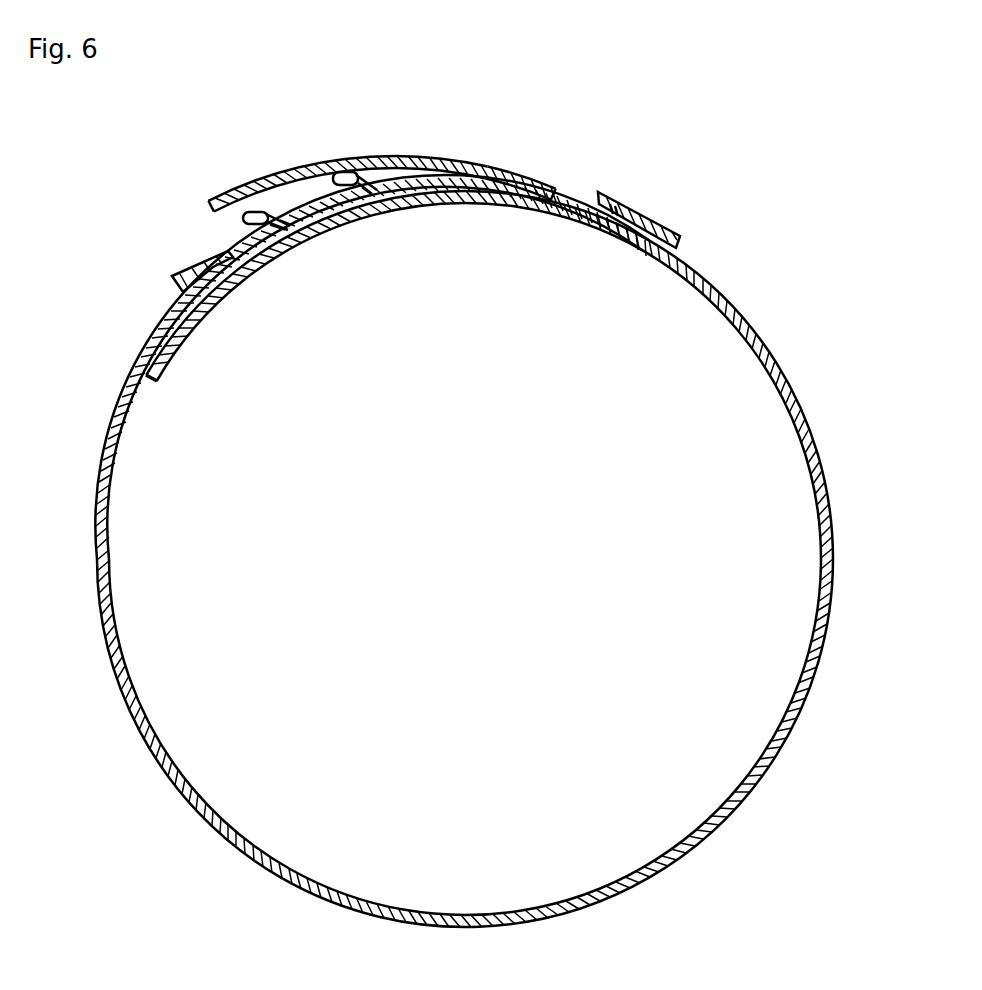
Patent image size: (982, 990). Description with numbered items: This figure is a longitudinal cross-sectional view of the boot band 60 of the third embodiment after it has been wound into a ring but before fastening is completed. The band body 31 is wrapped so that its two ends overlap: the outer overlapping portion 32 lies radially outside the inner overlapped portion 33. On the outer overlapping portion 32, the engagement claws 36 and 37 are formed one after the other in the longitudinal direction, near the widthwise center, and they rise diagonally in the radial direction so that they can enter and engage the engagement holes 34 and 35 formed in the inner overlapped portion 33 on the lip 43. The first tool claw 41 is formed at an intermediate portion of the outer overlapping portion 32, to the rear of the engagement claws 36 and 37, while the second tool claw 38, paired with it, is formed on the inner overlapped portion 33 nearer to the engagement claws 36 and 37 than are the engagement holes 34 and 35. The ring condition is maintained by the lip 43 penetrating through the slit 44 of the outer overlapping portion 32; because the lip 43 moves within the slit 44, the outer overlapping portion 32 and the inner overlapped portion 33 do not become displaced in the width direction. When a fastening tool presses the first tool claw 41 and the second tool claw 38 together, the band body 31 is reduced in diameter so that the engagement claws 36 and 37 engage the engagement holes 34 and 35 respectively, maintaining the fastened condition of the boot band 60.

The boot band 60 is at (803, 258).
The band body 31 is at (812, 418).
The outer overlapping portion 32 is at (217, 237).
The inner overlapped portion 33 is at (558, 231).
The engagement hole 34 is at (382, 144).
The engagement hole 35 is at (250, 182).
The engagement claw 36 is at (347, 190).
The engagement claw 37 is at (259, 236).
The second tool claw 38 is at (652, 221).
The first tool claw 41 is at (178, 276).
The lip 43 is at (402, 154).
The slit 44 is at (498, 168).